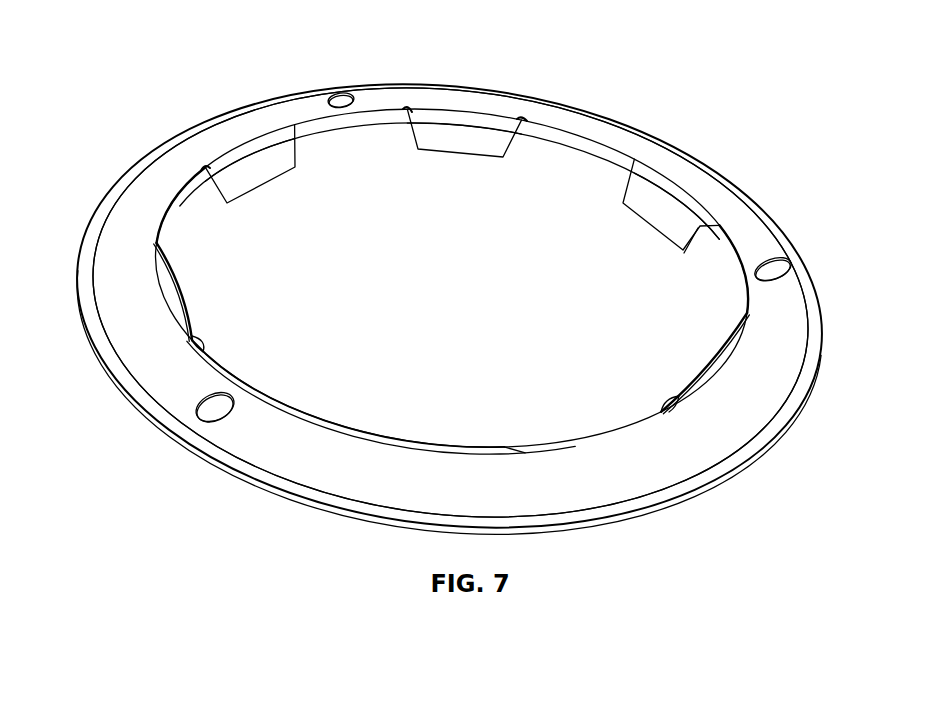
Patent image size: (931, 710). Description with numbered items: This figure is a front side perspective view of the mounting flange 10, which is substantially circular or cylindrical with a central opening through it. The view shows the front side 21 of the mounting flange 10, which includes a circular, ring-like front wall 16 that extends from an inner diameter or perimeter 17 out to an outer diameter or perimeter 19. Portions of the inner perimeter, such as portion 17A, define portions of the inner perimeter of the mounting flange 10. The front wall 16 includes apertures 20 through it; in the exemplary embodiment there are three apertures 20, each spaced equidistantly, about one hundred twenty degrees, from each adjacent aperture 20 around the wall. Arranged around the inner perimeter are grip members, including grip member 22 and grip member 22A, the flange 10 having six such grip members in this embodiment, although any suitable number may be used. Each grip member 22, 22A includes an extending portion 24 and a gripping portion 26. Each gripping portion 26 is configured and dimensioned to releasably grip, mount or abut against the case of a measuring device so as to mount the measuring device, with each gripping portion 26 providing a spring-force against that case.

The mounting flange 10 is at (345, 46).
The front wall 16 is at (663, 455).
The inner diameter or perimeter 17 is at (369, 120).
The portion of inner diameter or perimeter 17A is at (573, 142).
The outer diameter or perimeter 19 is at (97, 371).
The aperture 20 is at (215, 410).
The front side 21 is at (553, 92).
The grip member 22 is at (270, 188).
The grip member 22A is at (483, 158).
The extending portion 24 is at (680, 197).
The gripping portion 26 is at (433, 133).